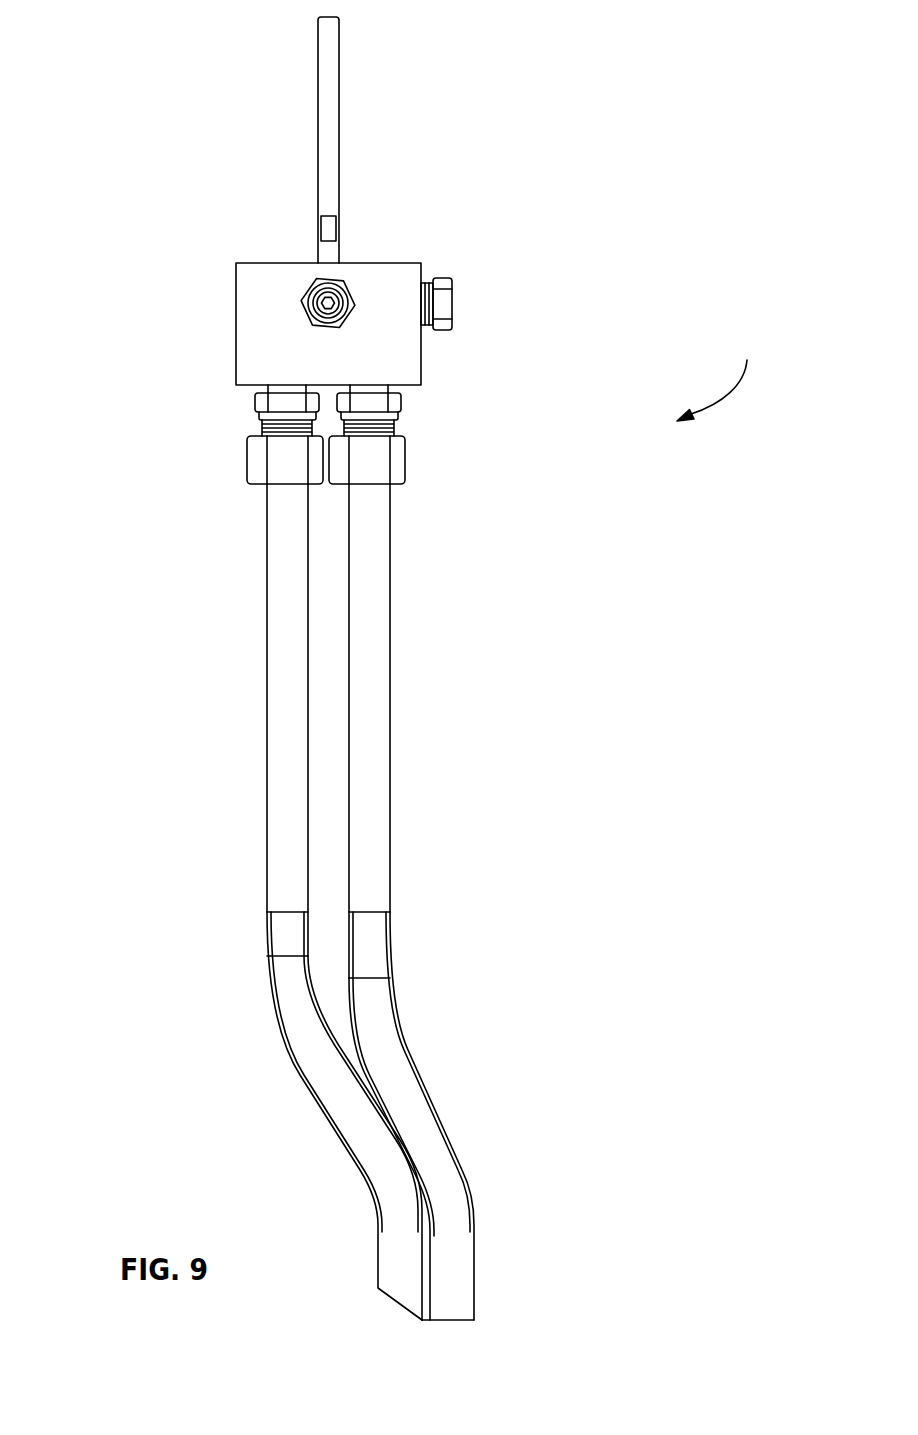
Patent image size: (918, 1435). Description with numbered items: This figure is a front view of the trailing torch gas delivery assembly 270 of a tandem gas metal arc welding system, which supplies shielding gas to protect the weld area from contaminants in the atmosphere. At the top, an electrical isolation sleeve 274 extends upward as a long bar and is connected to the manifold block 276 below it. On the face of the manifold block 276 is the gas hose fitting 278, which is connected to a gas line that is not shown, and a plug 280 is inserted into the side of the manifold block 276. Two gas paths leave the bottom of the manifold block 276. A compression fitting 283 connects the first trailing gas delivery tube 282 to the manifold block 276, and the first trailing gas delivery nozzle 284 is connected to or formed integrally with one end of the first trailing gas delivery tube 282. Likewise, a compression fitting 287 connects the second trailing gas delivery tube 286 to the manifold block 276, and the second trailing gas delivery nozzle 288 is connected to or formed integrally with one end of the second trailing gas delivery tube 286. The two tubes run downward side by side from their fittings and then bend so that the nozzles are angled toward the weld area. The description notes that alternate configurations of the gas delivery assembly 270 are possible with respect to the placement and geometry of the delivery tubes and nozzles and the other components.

The trailing torch gas delivery assembly 270 is at (722, 374).
The electrical isolation sleeve 274 is at (340, 125).
The manifold block 276 is at (235, 357).
The gas hose fitting 278 is at (303, 283).
The plug 280 is at (455, 305).
The first trailing gas delivery tube 282 is at (390, 767).
The compression fitting 283 is at (407, 463).
The first trailing gas delivery nozzle 284 is at (430, 1097).
The second trailing gas delivery tube 286 is at (268, 747).
The compression fitting 287 is at (248, 455).
The second trailing gas delivery nozzle 288 is at (293, 1067).